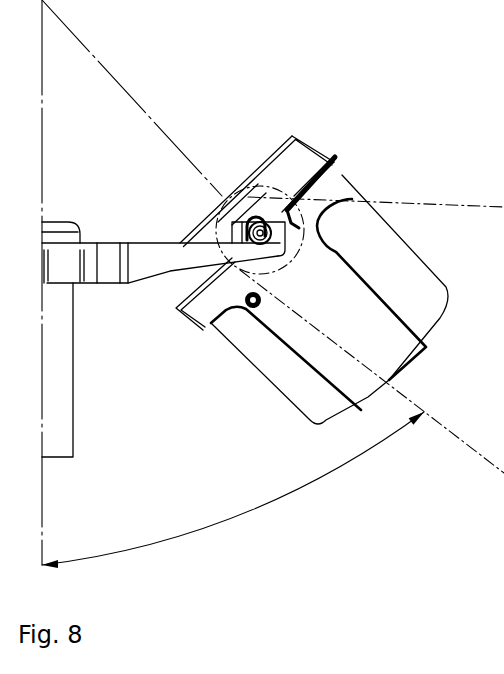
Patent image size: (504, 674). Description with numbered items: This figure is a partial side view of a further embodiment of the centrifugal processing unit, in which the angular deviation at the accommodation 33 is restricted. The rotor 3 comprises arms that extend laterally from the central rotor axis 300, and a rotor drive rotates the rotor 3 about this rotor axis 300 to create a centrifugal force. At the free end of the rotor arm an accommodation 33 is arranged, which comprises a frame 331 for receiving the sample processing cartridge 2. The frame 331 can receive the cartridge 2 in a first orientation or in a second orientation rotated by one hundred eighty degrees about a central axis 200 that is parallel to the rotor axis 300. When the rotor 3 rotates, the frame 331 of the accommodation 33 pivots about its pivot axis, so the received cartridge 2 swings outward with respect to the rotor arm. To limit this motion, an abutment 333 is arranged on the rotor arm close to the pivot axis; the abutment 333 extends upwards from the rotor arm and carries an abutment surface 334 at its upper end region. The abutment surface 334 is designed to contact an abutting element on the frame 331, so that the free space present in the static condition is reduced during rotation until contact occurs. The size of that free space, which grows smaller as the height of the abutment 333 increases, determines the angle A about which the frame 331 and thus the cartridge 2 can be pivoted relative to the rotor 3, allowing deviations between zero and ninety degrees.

The rotor axis 300 is at (42, 79).
The central axis 200 is at (155, 117).
The rotor 3 is at (60, 410).
The accommodation 33 is at (304, 95).
The sample processing cartridge 2 is at (383, 245).
The frame 331 is at (363, 388).
The abutment surface 334 is at (503, 372).
The abutment 333 is at (503, 537).
The angle A is at (258, 515).